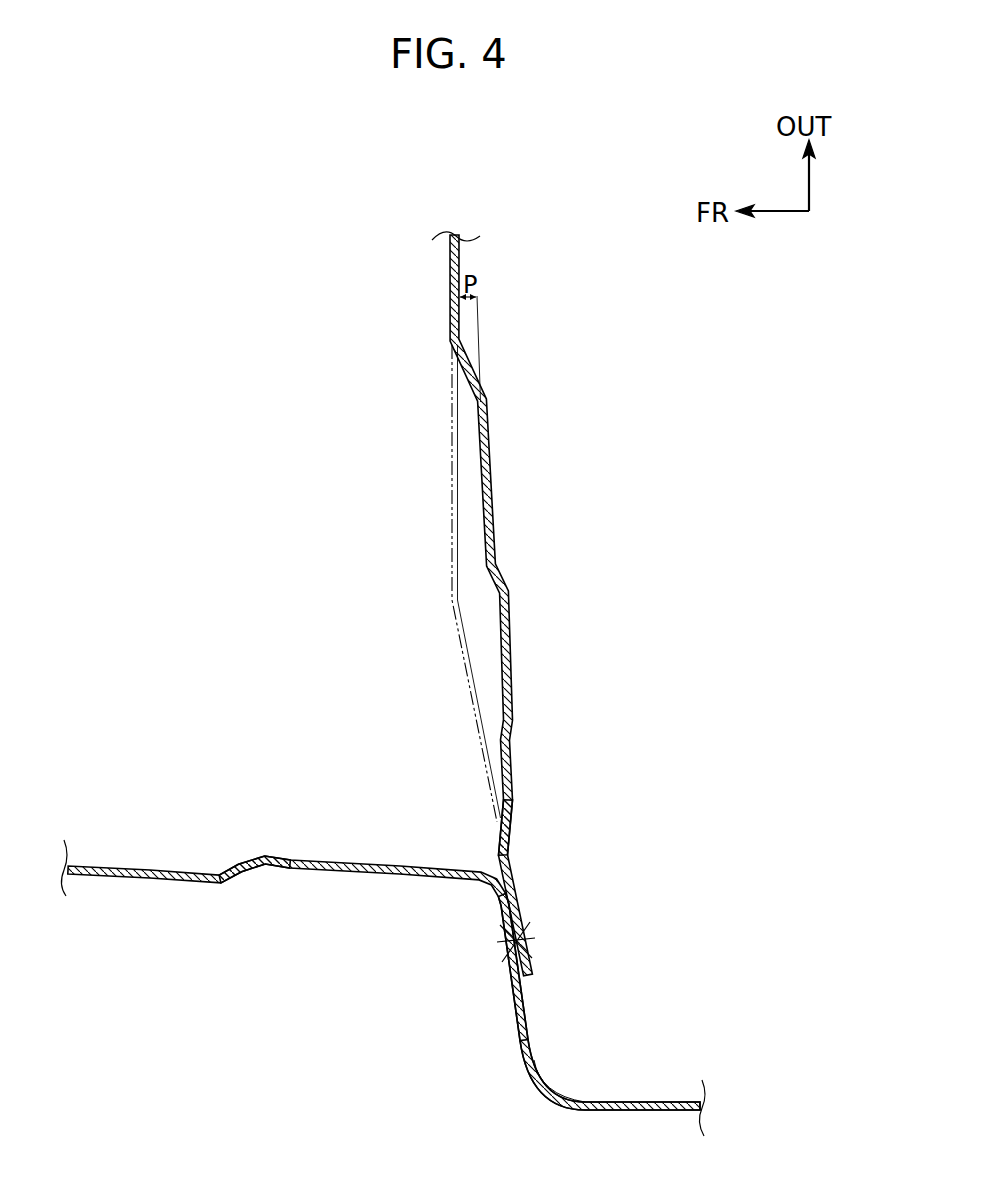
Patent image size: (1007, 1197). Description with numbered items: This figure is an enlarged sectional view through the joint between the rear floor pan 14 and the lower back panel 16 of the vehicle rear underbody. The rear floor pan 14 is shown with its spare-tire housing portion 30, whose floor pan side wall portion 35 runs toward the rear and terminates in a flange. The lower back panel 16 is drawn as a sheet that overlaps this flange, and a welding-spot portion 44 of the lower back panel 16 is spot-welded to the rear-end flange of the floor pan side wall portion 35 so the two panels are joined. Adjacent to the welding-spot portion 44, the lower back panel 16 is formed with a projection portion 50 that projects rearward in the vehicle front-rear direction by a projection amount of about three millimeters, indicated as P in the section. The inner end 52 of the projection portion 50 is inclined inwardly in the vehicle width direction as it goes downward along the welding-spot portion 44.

The rear floor pan 14 is at (640, 1101).
The lower back panel 16 is at (548, 903).
The spare-tire housing portion 30 is at (355, 895).
The floor pan side wall portion 35 is at (272, 866).
The welding-spot portion 44 is at (537, 932).
The projection portion 50 is at (513, 645).
The inner end 52 is at (513, 815).